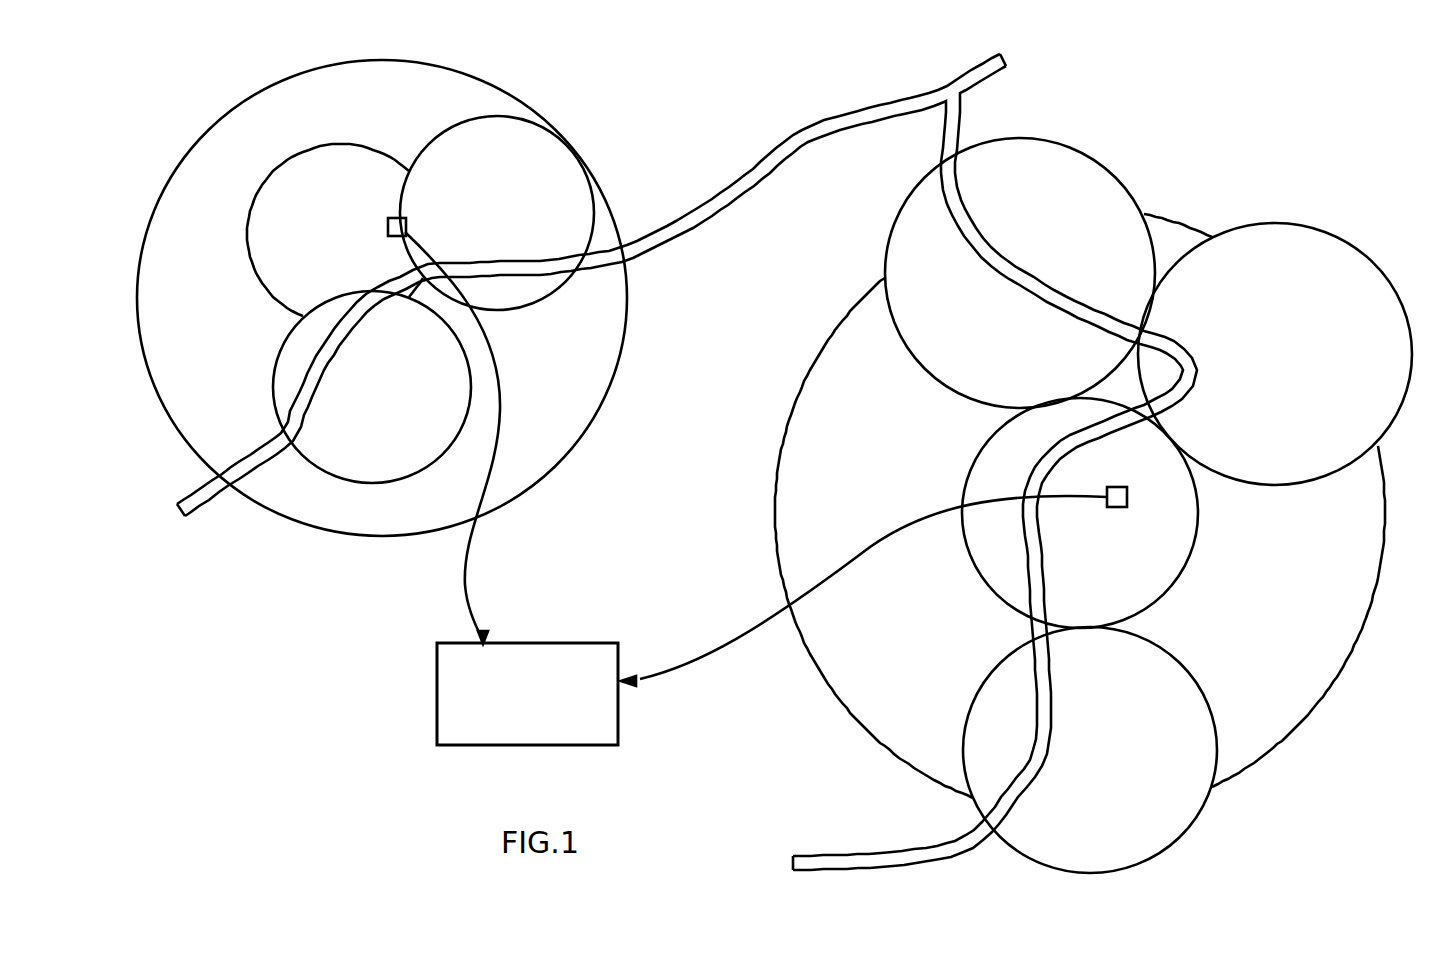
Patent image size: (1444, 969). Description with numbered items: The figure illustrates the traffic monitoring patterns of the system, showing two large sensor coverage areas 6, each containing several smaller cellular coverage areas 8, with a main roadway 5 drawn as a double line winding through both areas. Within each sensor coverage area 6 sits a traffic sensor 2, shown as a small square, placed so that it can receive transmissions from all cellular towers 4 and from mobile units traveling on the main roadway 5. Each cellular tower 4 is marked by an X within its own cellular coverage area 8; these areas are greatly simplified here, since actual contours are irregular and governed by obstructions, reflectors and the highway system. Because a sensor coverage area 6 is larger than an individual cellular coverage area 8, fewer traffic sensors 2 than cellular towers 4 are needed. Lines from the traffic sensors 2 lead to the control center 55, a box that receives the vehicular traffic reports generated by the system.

The traffic sensor 2 is at (395, 216).
The cellular tower 4 is at (1045, 235).
The main roadway 5 is at (800, 137).
The sensor coverage area 6 is at (761, 429).
The cellular coverage area 8 is at (829, 494).
The control center 55 is at (527, 643).